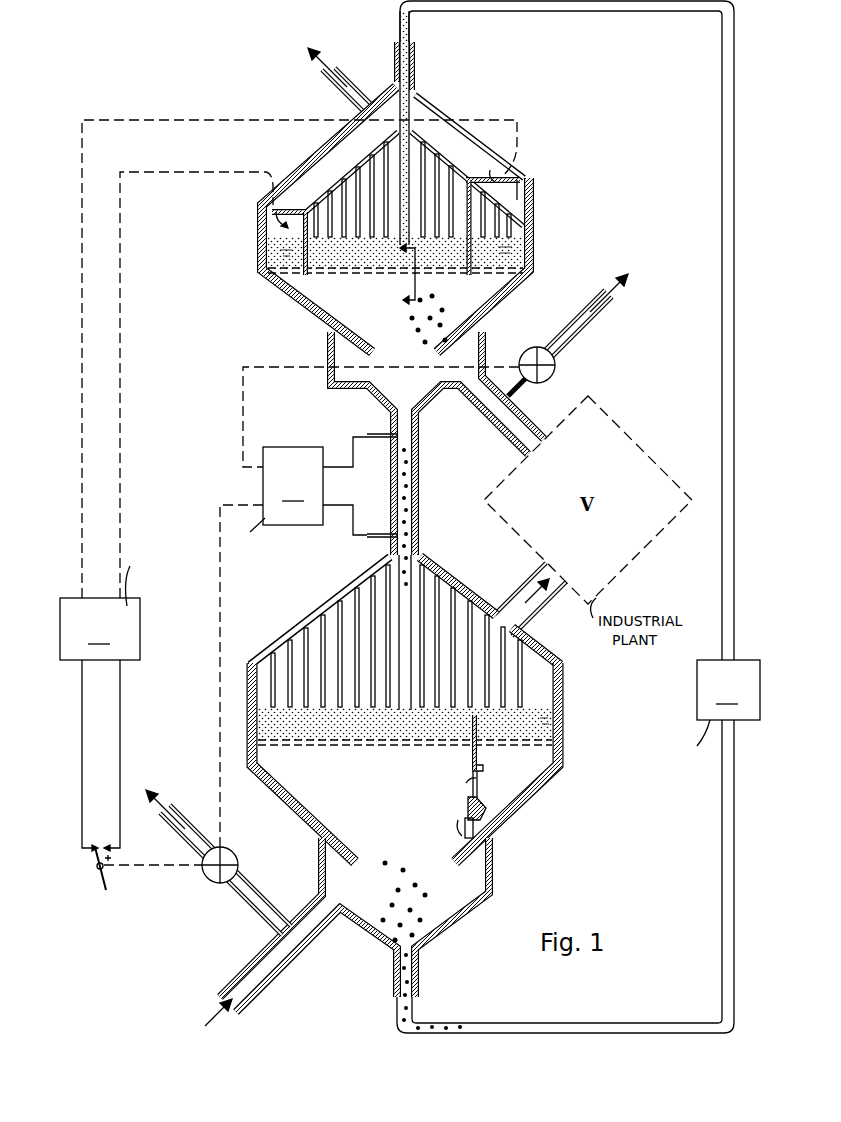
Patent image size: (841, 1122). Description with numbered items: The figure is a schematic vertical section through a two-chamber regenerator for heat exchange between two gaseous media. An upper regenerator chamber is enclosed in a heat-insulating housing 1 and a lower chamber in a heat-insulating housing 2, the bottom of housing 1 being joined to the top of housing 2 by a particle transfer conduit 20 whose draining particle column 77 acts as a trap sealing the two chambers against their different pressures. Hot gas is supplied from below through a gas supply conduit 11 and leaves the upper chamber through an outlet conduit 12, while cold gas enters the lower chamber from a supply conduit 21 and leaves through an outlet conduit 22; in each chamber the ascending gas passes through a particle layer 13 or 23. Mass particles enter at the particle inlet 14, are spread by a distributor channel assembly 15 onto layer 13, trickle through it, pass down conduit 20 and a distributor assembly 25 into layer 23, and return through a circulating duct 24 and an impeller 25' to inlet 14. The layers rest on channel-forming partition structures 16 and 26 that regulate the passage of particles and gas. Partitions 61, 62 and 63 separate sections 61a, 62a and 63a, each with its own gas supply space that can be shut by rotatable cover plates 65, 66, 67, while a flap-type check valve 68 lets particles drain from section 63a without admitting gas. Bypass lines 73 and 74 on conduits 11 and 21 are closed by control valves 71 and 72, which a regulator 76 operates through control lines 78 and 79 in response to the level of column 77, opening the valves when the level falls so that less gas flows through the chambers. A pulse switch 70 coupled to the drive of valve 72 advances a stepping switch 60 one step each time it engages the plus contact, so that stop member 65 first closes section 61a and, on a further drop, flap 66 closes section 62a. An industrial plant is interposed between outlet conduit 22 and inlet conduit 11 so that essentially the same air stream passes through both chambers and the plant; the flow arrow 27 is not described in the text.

The heat-insulating housing 1 is at (535, 228).
The heat-insulating housing 2 is at (546, 772).
The gas supply conduit 11 is at (503, 407).
The outlet conduit 12 is at (350, 92).
The particle layer 13 is at (352, 262).
The particle inlet 14 is at (405, 60).
The distributor channel assembly 15 is at (450, 176).
The channel-forming partition structure 16 is at (389, 268).
The particle transfer conduit 20 is at (420, 462).
The supply conduit 21 is at (263, 976).
The outlet conduit 22 is at (533, 604).
The particle layer 23 is at (330, 724).
The circulating duct 24 is at (413, 975).
The distributor assembly 25 is at (396, 636).
The impeller 25' is at (685, 707).
The channel-forming partition structure 26 is at (405, 741).
The flow direction arrow in pipe 22 27 is at (550, 560).
The stepping switch 60 is at (288, 484).
The partition 61 is at (306, 274).
The section 61a is at (283, 253).
The partition 62 is at (466, 262).
The section 62a is at (510, 249).
The partition 63 is at (478, 748).
The section 63a is at (552, 720).
The rotatable cover plate 65 is at (268, 222).
The rotatable cover plate 66 is at (524, 198).
The rotatable cover plate 67 is at (478, 788).
The check valve 68 is at (468, 838).
The pulse switch 70 is at (100, 850).
The control valve 71 is at (555, 373).
The control valve 72 is at (229, 856).
The bypass line 73 is at (574, 334).
The bypass line 74 is at (193, 829).
The regulator 76 is at (307, 493).
The particle column 77 is at (410, 491).
The control line 78 is at (517, 368).
The control line 79 is at (219, 613).